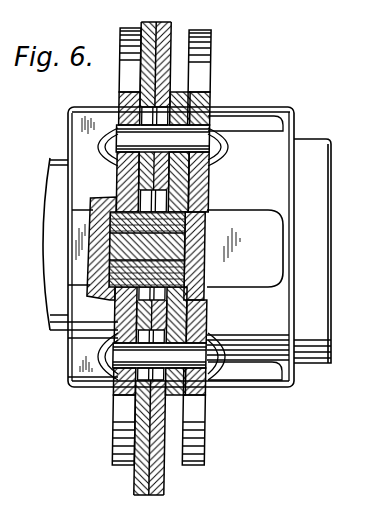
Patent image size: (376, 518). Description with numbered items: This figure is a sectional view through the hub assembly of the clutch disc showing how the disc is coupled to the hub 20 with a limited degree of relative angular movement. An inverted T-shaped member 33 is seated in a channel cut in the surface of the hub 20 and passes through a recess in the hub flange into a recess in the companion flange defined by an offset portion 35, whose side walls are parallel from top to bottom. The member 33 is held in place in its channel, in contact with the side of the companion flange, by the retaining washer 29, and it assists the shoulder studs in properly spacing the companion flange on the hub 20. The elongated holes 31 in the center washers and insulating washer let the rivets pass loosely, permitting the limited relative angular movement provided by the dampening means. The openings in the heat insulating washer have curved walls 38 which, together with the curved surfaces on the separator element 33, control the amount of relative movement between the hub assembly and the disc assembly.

The hub 20 is at (277, 392).
The retaining washer 29 is at (208, 183).
The elongated holes 31 is at (208, 100).
The inverted T-shaped member 33 is at (205, 211).
The offset portion 35 is at (100, 250).
The walls of openings 38 is at (134, 203).